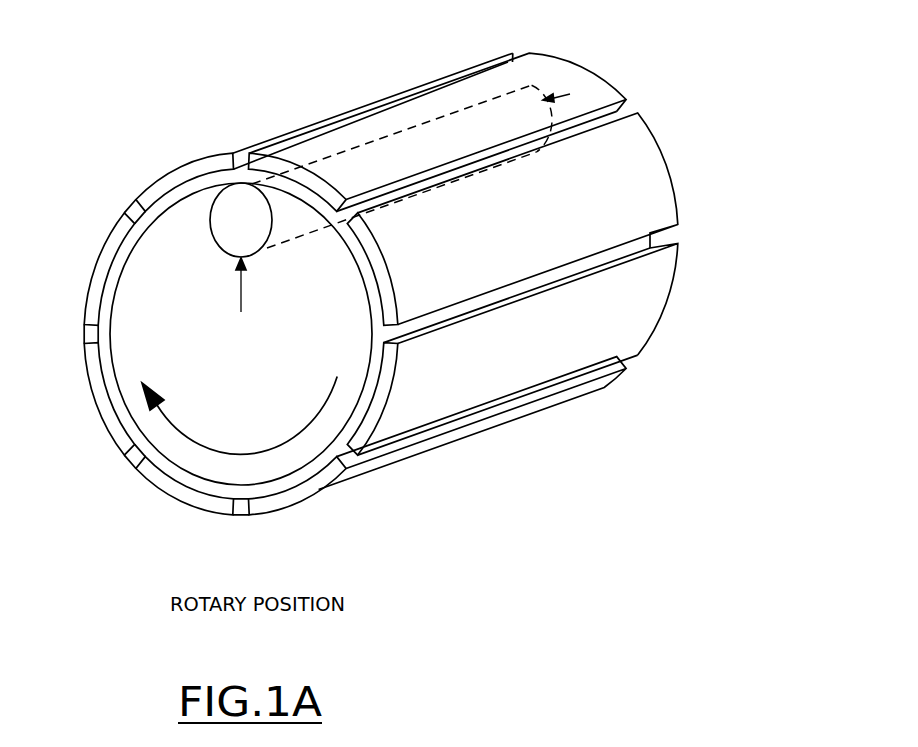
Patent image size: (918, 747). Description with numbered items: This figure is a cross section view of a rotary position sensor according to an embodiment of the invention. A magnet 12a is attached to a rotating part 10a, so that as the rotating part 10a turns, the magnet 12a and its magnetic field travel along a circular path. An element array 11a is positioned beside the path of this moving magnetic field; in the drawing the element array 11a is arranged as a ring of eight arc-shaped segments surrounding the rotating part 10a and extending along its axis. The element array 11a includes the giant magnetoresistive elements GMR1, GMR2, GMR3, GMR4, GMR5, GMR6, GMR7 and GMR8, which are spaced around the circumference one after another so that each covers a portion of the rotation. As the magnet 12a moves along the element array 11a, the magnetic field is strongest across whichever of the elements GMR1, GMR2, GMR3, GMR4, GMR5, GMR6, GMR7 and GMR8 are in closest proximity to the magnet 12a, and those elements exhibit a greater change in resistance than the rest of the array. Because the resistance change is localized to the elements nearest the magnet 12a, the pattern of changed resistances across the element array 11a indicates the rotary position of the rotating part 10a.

The rotating part 10a is at (340, 445).
The element array 11a is at (393, 271).
The magnet 12a is at (219, 247).
The GMR element GMR1 is at (91, 263).
The GMR element GMR2 is at (324, 132).
The GMR element GMR3 is at (438, 132).
The GMR element GMR4 is at (512, 219).
The GMR element GMR5 is at (512, 350).
The GMR element GMR6 is at (429, 446).
The GMR element GMR7 is at (178, 491).
The GMR element GMR8 is at (86, 390).